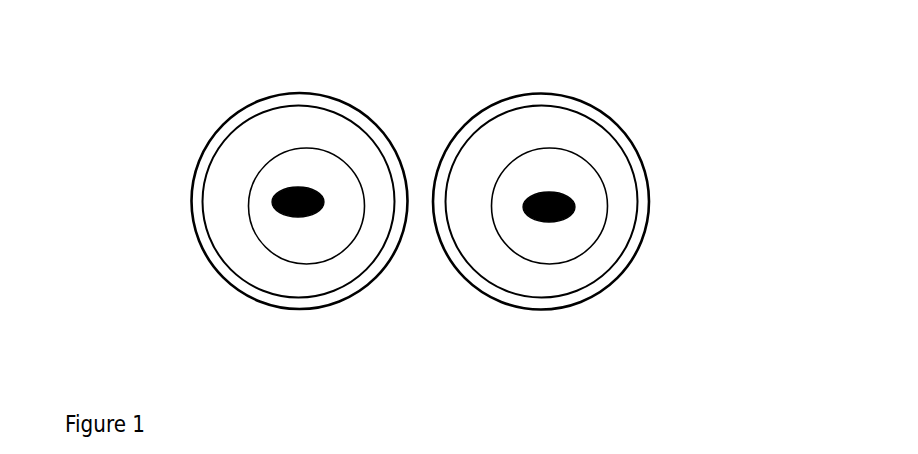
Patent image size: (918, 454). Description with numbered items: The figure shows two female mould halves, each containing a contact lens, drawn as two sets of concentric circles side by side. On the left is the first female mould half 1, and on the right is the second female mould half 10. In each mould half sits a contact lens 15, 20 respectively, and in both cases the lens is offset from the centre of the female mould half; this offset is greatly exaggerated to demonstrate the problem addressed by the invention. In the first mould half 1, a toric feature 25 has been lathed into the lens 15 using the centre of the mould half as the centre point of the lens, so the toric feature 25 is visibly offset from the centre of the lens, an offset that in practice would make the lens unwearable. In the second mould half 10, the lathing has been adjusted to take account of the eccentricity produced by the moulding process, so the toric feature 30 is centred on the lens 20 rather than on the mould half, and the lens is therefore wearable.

The first female mould half 1 is at (237, 192).
The second female mould half 10 is at (574, 210).
The contact lens 15 is at (317, 263).
The contact lens 20 is at (507, 247).
The toric feature 25 is at (280, 214).
The toric feature 30 is at (568, 219).